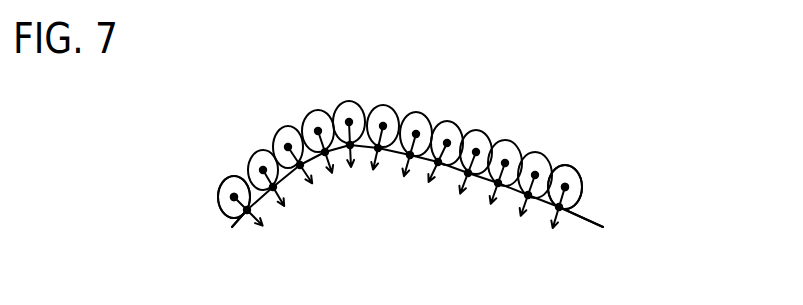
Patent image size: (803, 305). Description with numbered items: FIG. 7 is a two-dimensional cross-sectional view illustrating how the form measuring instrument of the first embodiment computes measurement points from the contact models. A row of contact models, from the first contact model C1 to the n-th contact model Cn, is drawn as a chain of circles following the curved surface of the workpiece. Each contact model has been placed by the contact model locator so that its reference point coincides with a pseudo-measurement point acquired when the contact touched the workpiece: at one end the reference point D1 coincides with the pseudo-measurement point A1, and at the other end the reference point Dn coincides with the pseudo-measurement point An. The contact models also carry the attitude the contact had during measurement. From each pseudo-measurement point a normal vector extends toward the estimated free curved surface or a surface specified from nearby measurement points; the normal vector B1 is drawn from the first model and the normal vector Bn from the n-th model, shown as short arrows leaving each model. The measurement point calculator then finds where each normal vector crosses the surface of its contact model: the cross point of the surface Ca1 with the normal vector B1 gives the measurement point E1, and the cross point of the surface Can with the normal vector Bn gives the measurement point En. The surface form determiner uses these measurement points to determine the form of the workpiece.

The contact model Cn is at (224, 162).
The contact model C1 is at (564, 150).
The reference point Dn is at (232, 194).
The pseudo-measurement point An is at (191, 178).
The surface of contact model Can is at (218, 200).
The normal vector Bn is at (247, 215).
The measurement point En is at (252, 210).
The reference point D1 is at (587, 180).
The pseudo-measurement point A1 is at (612, 173).
The surface of contact model Ca1 is at (586, 204).
The normal vector B1 is at (558, 212).
The measurement point E1 is at (558, 208).